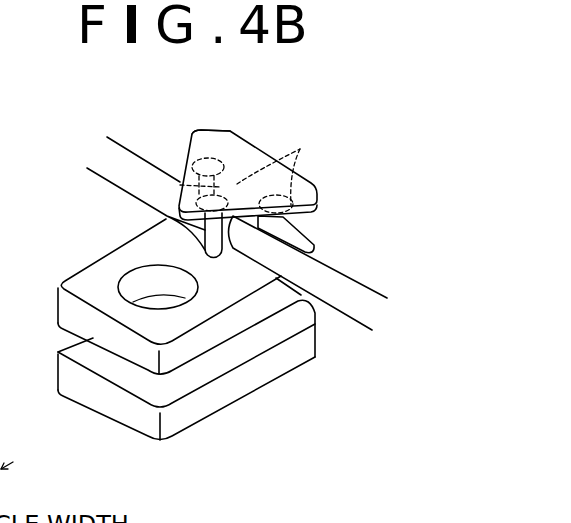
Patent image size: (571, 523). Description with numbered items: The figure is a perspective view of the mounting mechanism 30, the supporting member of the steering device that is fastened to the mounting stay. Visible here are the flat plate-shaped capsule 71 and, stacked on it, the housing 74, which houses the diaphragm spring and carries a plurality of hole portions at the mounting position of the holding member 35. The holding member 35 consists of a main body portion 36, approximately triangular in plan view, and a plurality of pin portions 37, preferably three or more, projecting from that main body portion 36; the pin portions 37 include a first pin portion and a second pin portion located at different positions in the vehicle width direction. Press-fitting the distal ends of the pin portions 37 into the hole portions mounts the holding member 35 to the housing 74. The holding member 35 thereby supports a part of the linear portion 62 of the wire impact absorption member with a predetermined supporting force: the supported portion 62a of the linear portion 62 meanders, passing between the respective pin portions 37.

The mounting mechanism 30 is at (215, 157).
The holding member 35 is at (255, 109).
The main body portion 36 is at (193, 131).
The pin portions 37 is at (167, 216).
The linear portion 62 is at (341, 281).
The supported portion 62a is at (221, 256).
The capsule 71 is at (203, 412).
The housing 74 is at (221, 331).